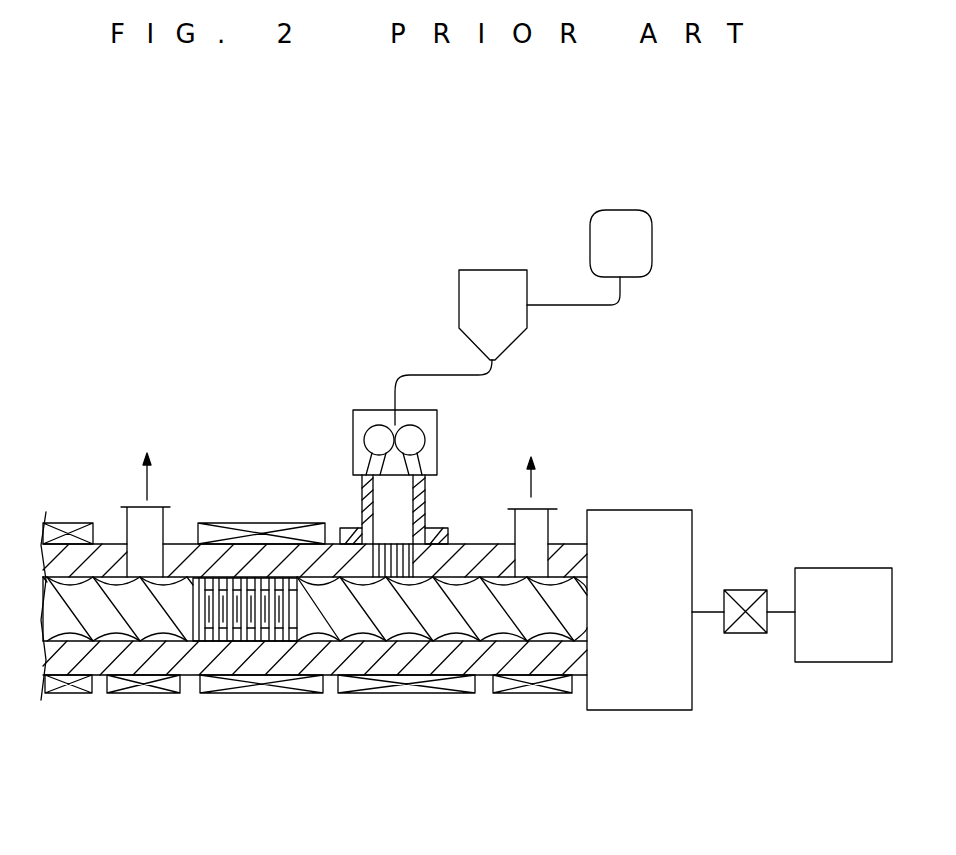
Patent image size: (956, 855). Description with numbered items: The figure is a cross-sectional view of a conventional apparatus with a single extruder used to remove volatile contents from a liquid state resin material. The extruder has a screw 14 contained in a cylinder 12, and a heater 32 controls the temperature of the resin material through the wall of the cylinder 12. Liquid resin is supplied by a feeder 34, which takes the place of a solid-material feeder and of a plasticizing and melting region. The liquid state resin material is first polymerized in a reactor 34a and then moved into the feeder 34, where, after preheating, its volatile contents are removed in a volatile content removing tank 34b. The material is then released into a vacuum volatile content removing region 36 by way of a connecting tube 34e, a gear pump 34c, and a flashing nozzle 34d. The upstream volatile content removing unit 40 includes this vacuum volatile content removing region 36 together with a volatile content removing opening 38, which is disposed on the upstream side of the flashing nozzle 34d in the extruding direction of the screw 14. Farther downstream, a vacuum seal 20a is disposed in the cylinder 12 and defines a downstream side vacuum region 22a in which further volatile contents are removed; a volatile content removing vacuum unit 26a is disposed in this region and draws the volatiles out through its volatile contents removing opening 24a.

The cylinder 12 is at (485, 658).
The screw 14 is at (308, 615).
The vacuum seal 20a is at (252, 633).
The downstream side vacuum region 22a is at (70, 583).
The volatile contents removing opening 24a is at (155, 530).
The volatile content removing vacuum unit 26a is at (126, 490).
The heater 32 is at (407, 693).
The feeder 34 is at (441, 266).
The reactor 34a is at (645, 258).
The volatile content removing tank 34b is at (514, 333).
The gear pump 34c is at (372, 410).
The flashing nozzle 34d is at (365, 540).
The connecting tube 34e is at (332, 506).
The vacuum volatile content removing region 36 is at (563, 543).
The volatile content removing opening 38 is at (523, 542).
The upstream volatile content removing unit 40 is at (545, 497).